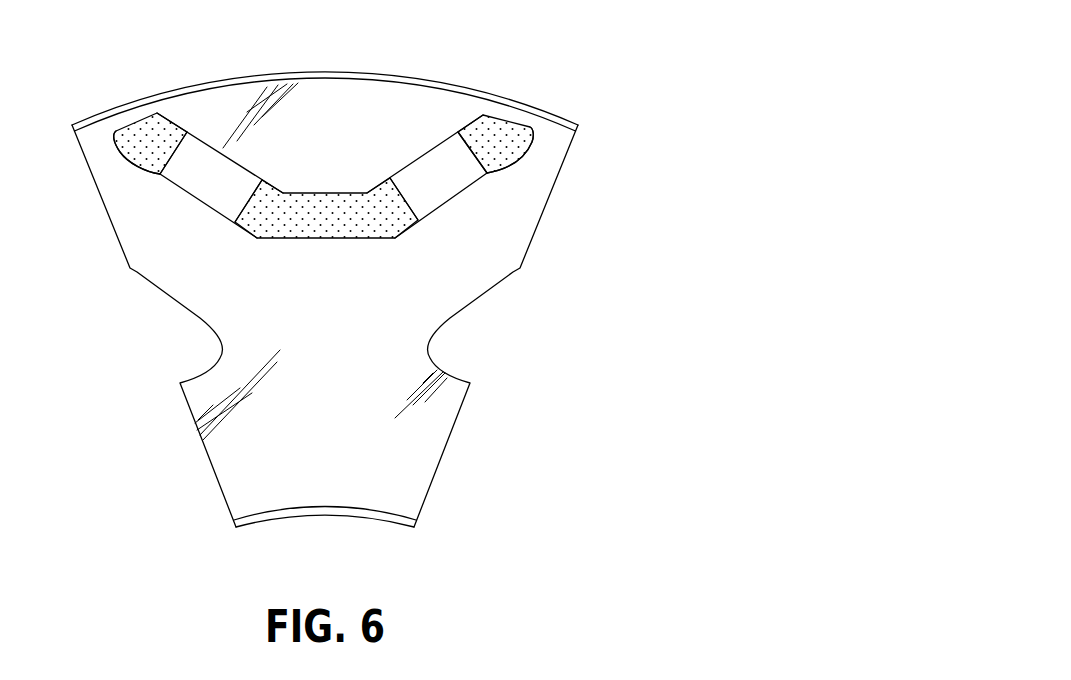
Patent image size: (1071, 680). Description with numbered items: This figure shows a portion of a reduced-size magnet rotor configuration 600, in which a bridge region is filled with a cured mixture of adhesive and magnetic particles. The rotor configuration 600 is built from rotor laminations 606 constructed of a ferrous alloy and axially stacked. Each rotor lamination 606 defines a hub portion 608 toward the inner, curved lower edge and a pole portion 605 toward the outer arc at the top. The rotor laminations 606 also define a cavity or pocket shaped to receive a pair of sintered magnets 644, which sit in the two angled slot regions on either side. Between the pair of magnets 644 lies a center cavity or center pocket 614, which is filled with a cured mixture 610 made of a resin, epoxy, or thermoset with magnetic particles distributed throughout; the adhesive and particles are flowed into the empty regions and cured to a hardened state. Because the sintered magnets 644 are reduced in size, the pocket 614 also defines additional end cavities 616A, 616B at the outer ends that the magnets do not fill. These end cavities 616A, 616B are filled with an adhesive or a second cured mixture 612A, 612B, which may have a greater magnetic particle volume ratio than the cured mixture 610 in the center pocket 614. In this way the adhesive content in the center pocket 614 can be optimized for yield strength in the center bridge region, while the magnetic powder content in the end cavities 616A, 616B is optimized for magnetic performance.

The rotor configuration 600 is at (600, 54).
The pole portion 605 is at (347, 114).
The rotor laminations 606 is at (400, 450).
The hub portion 608 is at (327, 476).
The cured mixture 610 is at (332, 218).
The second cured mixture 612A is at (497, 132).
The second cured mixture 612B is at (155, 128).
The center pocket 614 is at (257, 240).
The end cavity 616A is at (521, 150).
The end cavity 616B is at (143, 163).
The sintered magnets 644 is at (450, 200).